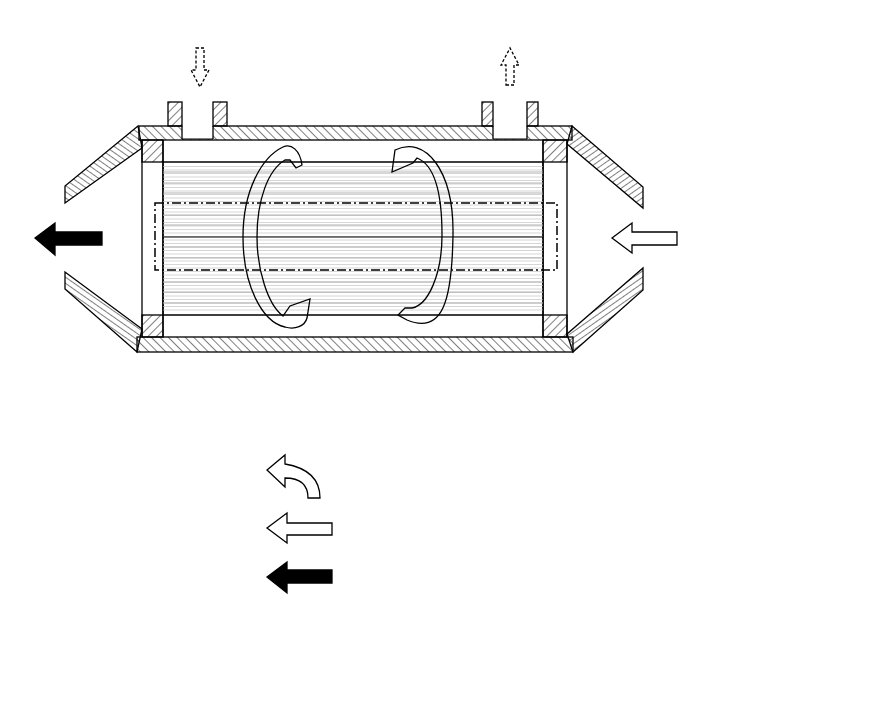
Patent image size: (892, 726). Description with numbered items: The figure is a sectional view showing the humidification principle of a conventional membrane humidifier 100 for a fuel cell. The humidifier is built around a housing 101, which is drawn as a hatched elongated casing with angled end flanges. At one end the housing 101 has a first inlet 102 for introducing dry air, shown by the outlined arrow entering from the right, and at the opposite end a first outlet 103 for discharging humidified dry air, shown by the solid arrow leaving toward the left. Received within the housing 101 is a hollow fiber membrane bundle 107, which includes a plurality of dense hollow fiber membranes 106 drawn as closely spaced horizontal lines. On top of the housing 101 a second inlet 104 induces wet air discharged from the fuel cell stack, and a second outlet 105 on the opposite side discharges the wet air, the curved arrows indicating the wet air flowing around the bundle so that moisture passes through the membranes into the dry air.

The conventional membrane humidifier 100 is at (423, 45).
The housing 101 is at (278, 352).
The first inlet 102 is at (567, 187).
The first outlet 103 is at (141, 183).
The second inlet 104 is at (202, 108).
The second outlet 105 is at (508, 110).
The dense hollow fiber membranes 106 is at (237, 290).
The hollow fiber membrane bundle 107 is at (383, 318).